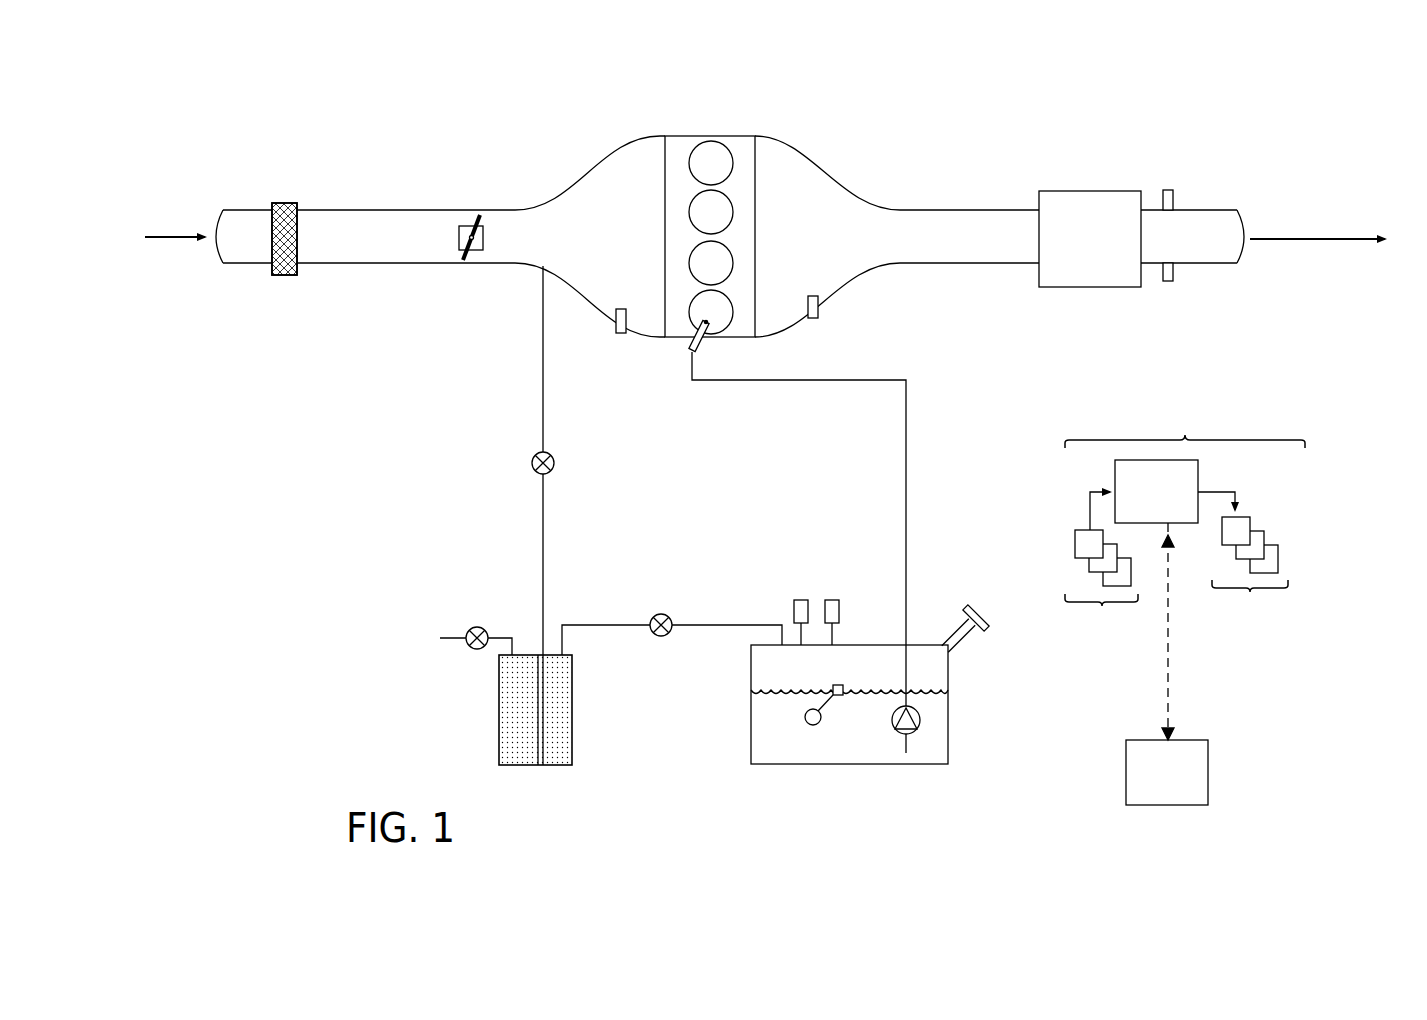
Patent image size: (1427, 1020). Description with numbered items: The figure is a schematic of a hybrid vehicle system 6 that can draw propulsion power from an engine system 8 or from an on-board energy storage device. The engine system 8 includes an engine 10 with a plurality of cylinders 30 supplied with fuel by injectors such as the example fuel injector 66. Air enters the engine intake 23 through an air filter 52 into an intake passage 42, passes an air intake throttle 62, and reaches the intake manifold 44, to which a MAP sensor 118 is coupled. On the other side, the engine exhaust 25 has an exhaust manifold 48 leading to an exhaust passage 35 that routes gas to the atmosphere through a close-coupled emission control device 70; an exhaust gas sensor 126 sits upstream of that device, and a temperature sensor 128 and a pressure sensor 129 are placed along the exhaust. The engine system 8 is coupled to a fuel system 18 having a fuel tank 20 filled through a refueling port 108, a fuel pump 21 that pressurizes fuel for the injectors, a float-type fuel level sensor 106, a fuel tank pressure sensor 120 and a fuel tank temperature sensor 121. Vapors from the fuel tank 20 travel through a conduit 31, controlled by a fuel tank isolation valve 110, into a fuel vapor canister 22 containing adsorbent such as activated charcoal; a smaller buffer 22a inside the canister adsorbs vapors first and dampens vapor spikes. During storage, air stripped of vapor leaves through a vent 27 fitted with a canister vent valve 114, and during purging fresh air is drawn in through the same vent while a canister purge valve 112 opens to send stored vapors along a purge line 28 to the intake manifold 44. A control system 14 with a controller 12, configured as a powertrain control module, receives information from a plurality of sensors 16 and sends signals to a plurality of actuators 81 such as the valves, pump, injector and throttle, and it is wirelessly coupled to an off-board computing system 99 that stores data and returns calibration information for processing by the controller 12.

The hybrid vehicle system 6 is at (238, 116).
The engine system 8 is at (1268, 113).
The engine 10 is at (755, 220).
The controller 12 is at (1162, 600).
The control system 14 is at (1185, 420).
The sensors 16 is at (1101, 587).
The fuel system 18 is at (988, 789).
The fuel tank 20 is at (751, 764).
The fuel pump 21 is at (920, 727).
The fuel vapor canister 22 is at (514, 765).
The buffer 22a is at (558, 765).
The engine intake 23 is at (592, 160).
The engine exhaust 25 is at (864, 172).
The vent 27 is at (449, 638).
The purge line 28 is at (543, 426).
The cylinders 30 is at (729, 157).
The conduit 31 is at (710, 625).
The exhaust passage 35 is at (1215, 210).
The intake passage 42 is at (250, 265).
The intake manifold 44 is at (590, 236).
The exhaust manifold 48 is at (897, 236).
The air filter 52 is at (287, 203).
The air intake throttle 62 is at (483, 243).
The fuel injector 66 is at (705, 345).
The emission control device 70 is at (1078, 191).
The actuators 81 is at (1250, 574).
The off-board computing system 99 is at (1167, 772).
The fuel level sensor 106 is at (843, 685).
The refueling port 108 is at (975, 620).
The fuel tank isolation valve 110 is at (653, 617).
The canister purge valve 112 is at (552, 457).
The canister vent valve 114 is at (477, 627).
The MAP sensor 118 is at (616, 316).
The pressure sensor 120 is at (839, 607).
The temperature sensor 121 is at (801, 600).
The exhaust gas sensor 126 is at (818, 301).
The temperature sensor 128 is at (1168, 281).
The pressure sensor 129 is at (1168, 190).